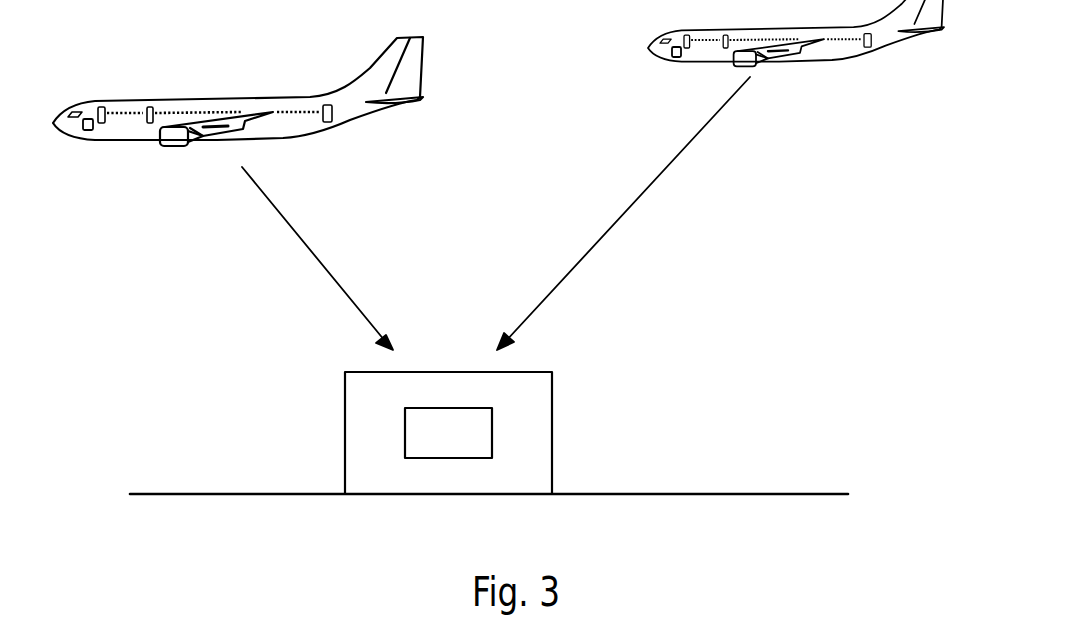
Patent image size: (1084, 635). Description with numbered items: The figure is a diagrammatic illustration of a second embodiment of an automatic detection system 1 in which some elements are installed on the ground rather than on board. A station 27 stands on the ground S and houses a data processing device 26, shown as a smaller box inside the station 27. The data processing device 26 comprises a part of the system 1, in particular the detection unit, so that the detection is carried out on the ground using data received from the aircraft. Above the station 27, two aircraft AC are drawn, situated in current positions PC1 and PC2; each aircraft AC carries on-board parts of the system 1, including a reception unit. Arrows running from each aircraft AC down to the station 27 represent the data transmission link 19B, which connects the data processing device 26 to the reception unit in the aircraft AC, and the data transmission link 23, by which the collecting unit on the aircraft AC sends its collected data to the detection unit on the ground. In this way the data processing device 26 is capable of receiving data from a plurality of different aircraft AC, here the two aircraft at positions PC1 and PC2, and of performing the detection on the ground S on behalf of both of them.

The system 1 is at (85, 130).
The aircraft AC is at (498, 122).
The current position PC1 is at (160, 152).
The current position PC2 is at (842, 78).
The data transmission link 19B is at (475, 213).
The data transmission link 23 is at (307, 248).
The data processing device 26 is at (492, 430).
The station 27 is at (552, 453).
The ground S is at (738, 495).